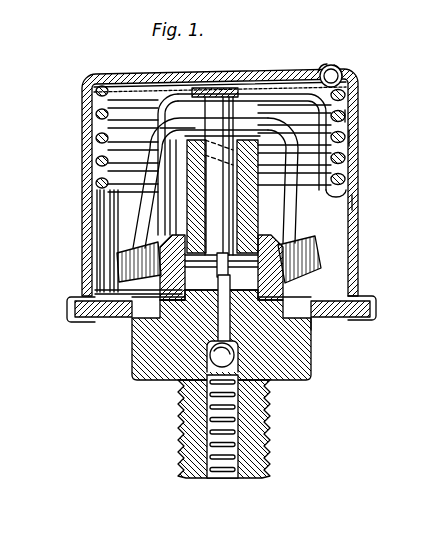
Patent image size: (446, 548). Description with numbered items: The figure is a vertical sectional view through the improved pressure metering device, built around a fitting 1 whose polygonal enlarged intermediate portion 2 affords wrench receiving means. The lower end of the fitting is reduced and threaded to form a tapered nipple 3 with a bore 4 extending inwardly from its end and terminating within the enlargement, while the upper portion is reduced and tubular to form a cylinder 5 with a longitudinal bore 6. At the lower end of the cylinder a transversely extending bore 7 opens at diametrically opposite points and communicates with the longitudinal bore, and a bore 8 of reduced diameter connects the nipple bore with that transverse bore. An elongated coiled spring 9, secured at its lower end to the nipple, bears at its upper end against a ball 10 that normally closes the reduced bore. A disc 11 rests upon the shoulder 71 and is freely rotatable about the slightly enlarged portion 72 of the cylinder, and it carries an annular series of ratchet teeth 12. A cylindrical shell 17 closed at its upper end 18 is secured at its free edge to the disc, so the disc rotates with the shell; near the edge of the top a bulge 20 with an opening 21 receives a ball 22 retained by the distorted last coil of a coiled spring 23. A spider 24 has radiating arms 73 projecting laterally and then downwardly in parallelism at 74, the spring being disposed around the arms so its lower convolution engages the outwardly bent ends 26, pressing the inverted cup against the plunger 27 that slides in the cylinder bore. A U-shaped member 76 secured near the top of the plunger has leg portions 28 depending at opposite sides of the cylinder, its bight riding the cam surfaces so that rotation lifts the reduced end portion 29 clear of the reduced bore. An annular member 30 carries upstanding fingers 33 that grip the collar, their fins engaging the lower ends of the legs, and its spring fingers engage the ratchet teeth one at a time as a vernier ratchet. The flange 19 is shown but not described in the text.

The fitting 1 is at (224, 395).
The enlarged intermediate portion 2 is at (143, 360).
The nipple 3 is at (262, 423).
The bore 4 is at (223, 479).
The cylinder 5 is at (250, 223).
The longitudinal bore 6 is at (254, 202).
The transversely extending bore 7 is at (190, 243).
The bore of reduced diameter 8 is at (237, 297).
The elongated coiled spring 9 is at (225, 437).
The ball 10 is at (182, 380).
The disc 11 is at (117, 315).
The ratchet teeth 12 is at (366, 300).
The shell 17 is at (357, 182).
The closed upper end 18 is at (140, 74).
The flange 19 is at (68, 316).
The bulge 20 is at (318, 66).
The opening 21 is at (343, 68).
The ball 22 is at (329, 65).
The coiled spring 23 is at (350, 139).
The spider 24 is at (233, 89).
The outwardly bent ends 26 is at (357, 203).
The plunger 27 is at (207, 98).
The leg portions 28 is at (142, 216).
The reduced end portion 29 is at (219, 270).
The annular member 30 is at (316, 323).
The upstanding fingers 33 is at (311, 245).
The shoulder 71 is at (177, 302).
The slightly enlarged portion 72 is at (215, 350).
The radiating arms 73 is at (276, 96).
The parallel downward portions of the arms 74 is at (346, 121).
The U-shaped member 76 is at (160, 130).